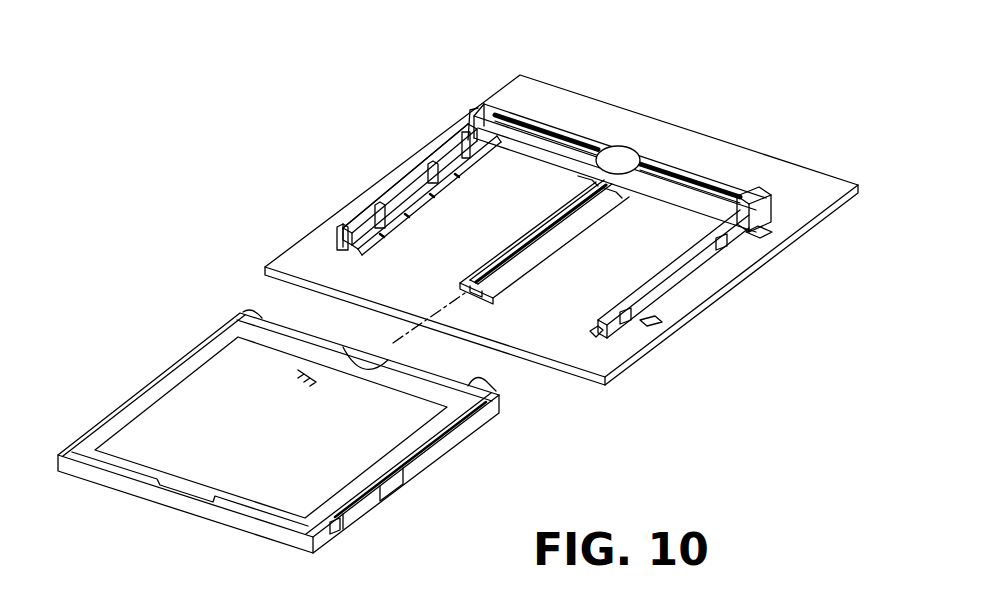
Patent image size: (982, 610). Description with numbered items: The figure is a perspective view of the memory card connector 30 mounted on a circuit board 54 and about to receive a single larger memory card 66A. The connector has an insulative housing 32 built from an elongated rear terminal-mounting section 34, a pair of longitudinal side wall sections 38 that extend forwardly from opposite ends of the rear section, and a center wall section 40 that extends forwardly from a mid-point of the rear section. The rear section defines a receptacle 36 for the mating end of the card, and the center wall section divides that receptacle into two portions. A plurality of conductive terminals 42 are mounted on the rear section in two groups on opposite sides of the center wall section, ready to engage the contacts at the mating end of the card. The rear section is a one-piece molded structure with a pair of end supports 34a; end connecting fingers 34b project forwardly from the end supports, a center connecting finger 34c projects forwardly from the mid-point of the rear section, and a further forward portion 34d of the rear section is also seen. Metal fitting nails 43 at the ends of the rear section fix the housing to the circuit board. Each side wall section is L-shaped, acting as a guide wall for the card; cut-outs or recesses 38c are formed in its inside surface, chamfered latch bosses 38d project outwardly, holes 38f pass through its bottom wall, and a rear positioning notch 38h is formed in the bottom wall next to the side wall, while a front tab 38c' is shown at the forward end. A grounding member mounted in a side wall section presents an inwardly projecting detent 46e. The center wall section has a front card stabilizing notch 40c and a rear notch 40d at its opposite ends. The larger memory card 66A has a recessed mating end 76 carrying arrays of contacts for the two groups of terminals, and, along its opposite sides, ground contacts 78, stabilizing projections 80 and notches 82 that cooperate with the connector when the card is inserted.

The memory card connector 30 is at (536, 188).
The insulative housing 32 is at (436, 350).
The rear terminal-mounting section 34 is at (644, 150).
The end supports 34a is at (760, 217).
The end connecting fingers 34b is at (468, 140).
The center connecting finger 34c is at (613, 193).
The housing front portion 34d is at (590, 180).
The receptacle 36 is at (680, 195).
The side wall sections 38 is at (518, 223).
The cut-outs or recesses 38c is at (393, 176).
The guide rail front tab 38c' is at (280, 232).
The chamfered latch bosses 38d is at (724, 241).
The holes 38f is at (396, 233).
The rear positioning notch 38h is at (463, 160).
The center wall section 40 is at (527, 273).
The front card stabilizing notch 40c is at (465, 294).
The rear notch 40d is at (598, 196).
The conductive terminals 42 is at (516, 150).
The fitting nails 43 is at (750, 233).
The inwardly projecting detent 46e is at (378, 207).
The circuit board 54 is at (640, 363).
The larger memory card 66A is at (213, 513).
The recessed mating end 76 is at (488, 383).
The ground contacts 78 is at (391, 491).
The stabilizing projections 80 is at (352, 528).
The notches 82 is at (333, 535).